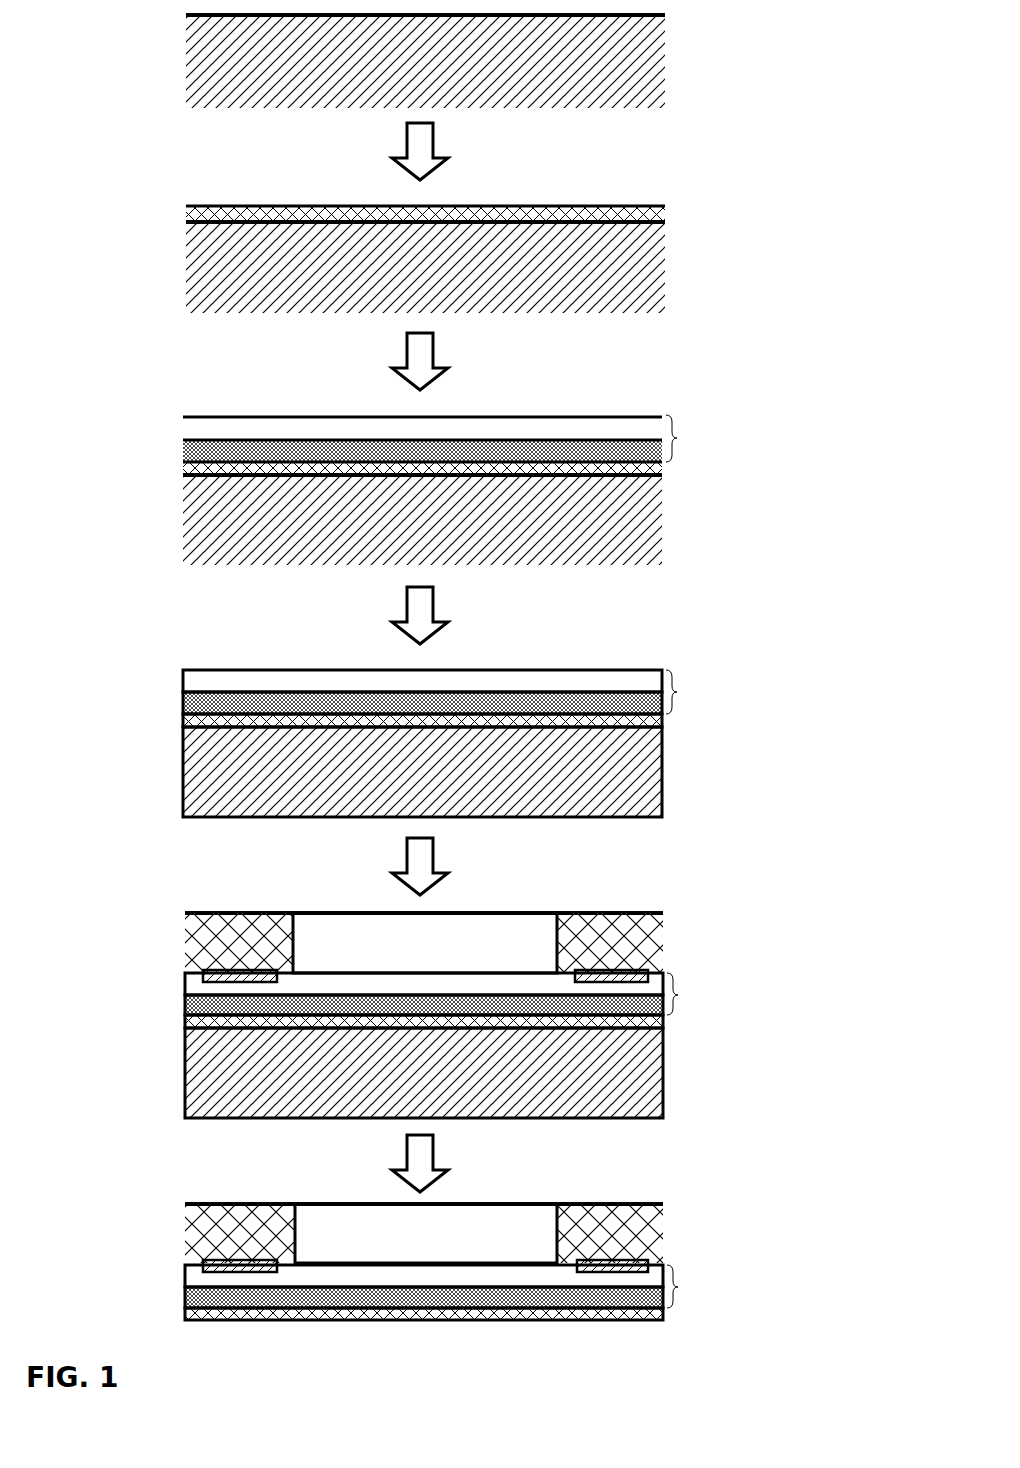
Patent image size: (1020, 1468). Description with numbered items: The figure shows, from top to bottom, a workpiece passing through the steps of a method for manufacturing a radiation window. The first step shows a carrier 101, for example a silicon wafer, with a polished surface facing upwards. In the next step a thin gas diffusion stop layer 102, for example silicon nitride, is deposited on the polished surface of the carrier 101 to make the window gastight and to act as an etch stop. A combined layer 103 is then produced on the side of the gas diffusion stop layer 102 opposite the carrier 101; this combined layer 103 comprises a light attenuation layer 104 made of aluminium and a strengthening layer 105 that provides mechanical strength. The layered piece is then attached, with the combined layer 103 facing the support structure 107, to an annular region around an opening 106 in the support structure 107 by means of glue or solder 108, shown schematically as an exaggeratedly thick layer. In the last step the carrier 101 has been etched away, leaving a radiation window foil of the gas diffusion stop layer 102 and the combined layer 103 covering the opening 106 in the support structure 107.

The carrier 101 is at (655, 60).
The gas diffusion stop layer 102 is at (663, 214).
The combined layer 103 is at (700, 861).
The light attenuation layer 104 is at (183, 450).
The strengthening layer 105 is at (183, 418).
The opening 106 is at (488, 930).
The support structure 107 is at (663, 931).
The glue or solder 108 is at (640, 970).